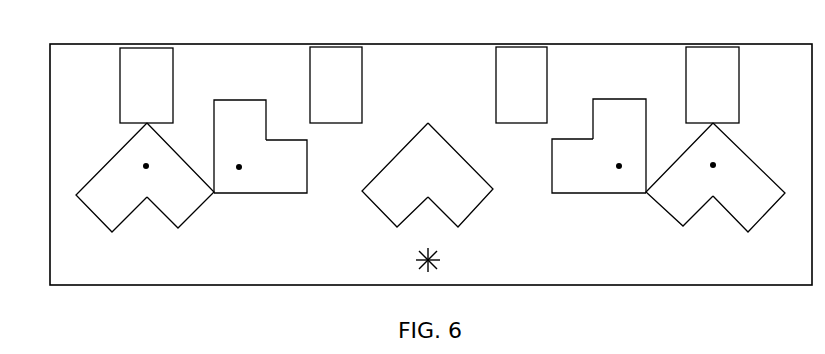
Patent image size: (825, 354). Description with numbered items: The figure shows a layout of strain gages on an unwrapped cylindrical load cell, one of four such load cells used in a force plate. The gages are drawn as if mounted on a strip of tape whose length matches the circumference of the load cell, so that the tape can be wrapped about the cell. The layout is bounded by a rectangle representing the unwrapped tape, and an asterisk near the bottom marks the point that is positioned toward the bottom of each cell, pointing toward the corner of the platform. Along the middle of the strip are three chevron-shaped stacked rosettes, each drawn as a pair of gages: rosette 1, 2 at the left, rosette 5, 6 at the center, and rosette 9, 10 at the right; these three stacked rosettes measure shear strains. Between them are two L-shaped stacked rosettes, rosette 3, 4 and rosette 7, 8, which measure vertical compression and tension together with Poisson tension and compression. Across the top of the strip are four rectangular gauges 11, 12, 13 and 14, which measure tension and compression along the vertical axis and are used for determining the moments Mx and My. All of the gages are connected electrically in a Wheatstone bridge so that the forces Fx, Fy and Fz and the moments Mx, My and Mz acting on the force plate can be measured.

The stacked rosette strain gage 1 is at (112, 177).
The stacked rosette strain gage 2 is at (180, 175).
The stacked rosette strain gage 3 is at (260, 166).
The stacked rosette strain gage 4 is at (240, 146).
The stacked rosette strain gage 5 is at (395, 175).
The stacked rosette strain gage 6 is at (460, 175).
The stacked rosette strain gage 7 is at (619, 146).
The stacked rosette strain gage 8 is at (599, 166).
The stacked rosette strain gage 9 is at (681, 174).
The stacked rosette strain gage 10 is at (749, 177).
The strain gauge 11 is at (146, 85).
The strain gauge 12 is at (336, 85).
The strain gauge 13 is at (521, 85).
The strain gauge 14 is at (712, 85).